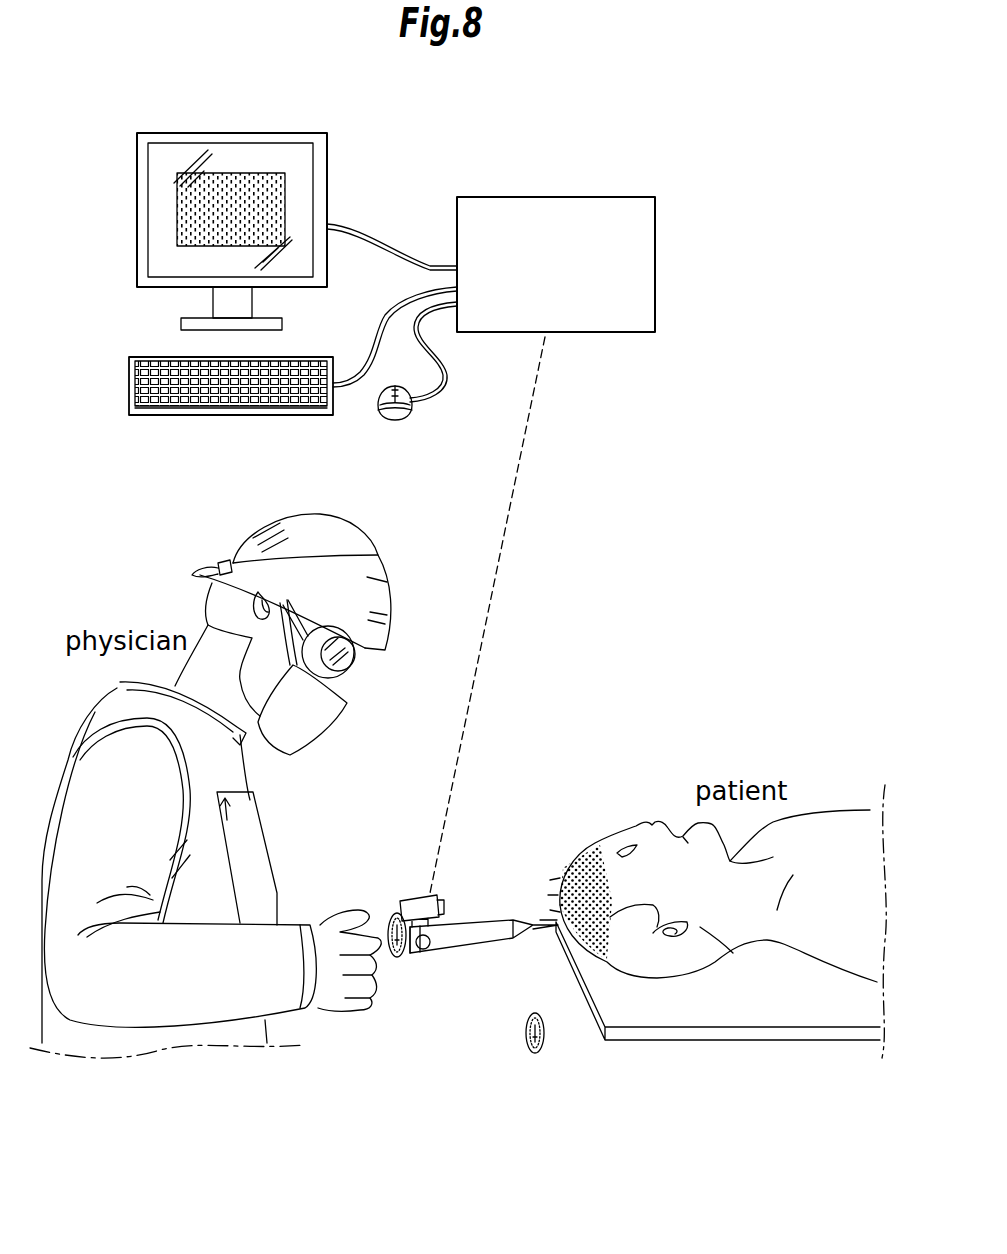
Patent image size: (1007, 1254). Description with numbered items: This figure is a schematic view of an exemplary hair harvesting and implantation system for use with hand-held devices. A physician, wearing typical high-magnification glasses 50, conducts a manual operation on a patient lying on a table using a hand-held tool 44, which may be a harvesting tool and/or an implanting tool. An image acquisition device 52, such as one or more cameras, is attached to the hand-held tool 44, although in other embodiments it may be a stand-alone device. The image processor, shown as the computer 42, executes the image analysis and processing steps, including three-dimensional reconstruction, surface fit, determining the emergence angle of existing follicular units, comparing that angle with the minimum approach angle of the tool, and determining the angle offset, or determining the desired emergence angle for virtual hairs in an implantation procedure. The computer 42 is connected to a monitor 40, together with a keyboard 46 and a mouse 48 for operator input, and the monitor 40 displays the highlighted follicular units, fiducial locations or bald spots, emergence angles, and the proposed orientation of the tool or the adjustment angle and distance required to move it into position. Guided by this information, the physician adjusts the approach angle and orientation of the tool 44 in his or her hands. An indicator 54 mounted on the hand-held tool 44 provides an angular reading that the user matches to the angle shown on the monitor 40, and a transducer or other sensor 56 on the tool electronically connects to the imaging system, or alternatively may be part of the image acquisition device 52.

The monitor 40 is at (327, 153).
The computer 42 is at (600, 197).
The hand-held tool 44 is at (478, 925).
The keyboard 46 is at (200, 418).
The mouse 48 is at (400, 422).
The glasses 50 is at (345, 668).
The image acquisition device 52 is at (407, 889).
The indicator 54 is at (400, 970).
The sensor 56 is at (426, 949).